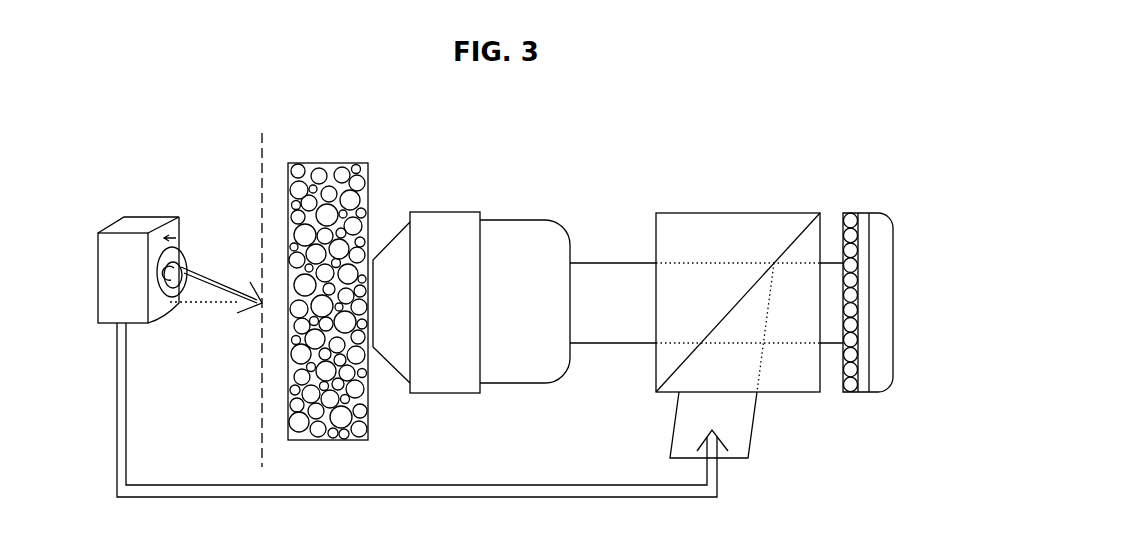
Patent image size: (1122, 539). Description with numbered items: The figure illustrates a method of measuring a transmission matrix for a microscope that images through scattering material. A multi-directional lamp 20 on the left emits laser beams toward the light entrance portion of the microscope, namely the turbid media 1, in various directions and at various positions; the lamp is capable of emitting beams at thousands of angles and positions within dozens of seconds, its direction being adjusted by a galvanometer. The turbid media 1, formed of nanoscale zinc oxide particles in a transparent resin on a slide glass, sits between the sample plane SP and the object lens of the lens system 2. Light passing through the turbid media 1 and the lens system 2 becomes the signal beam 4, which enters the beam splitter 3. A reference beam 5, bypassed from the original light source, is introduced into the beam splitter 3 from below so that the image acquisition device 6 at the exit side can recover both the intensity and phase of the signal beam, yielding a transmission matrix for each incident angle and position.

The multi-directional lamp 20 is at (150, 217).
The sample plane SP is at (262, 287).
The turbid media 1 is at (328, 163).
The lens system 2 is at (463, 212).
The signal beam 4 is at (611, 262).
The beam splitter 3 is at (740, 213).
The image acquisition device 6 is at (867, 213).
The reference beam 5 is at (720, 482).